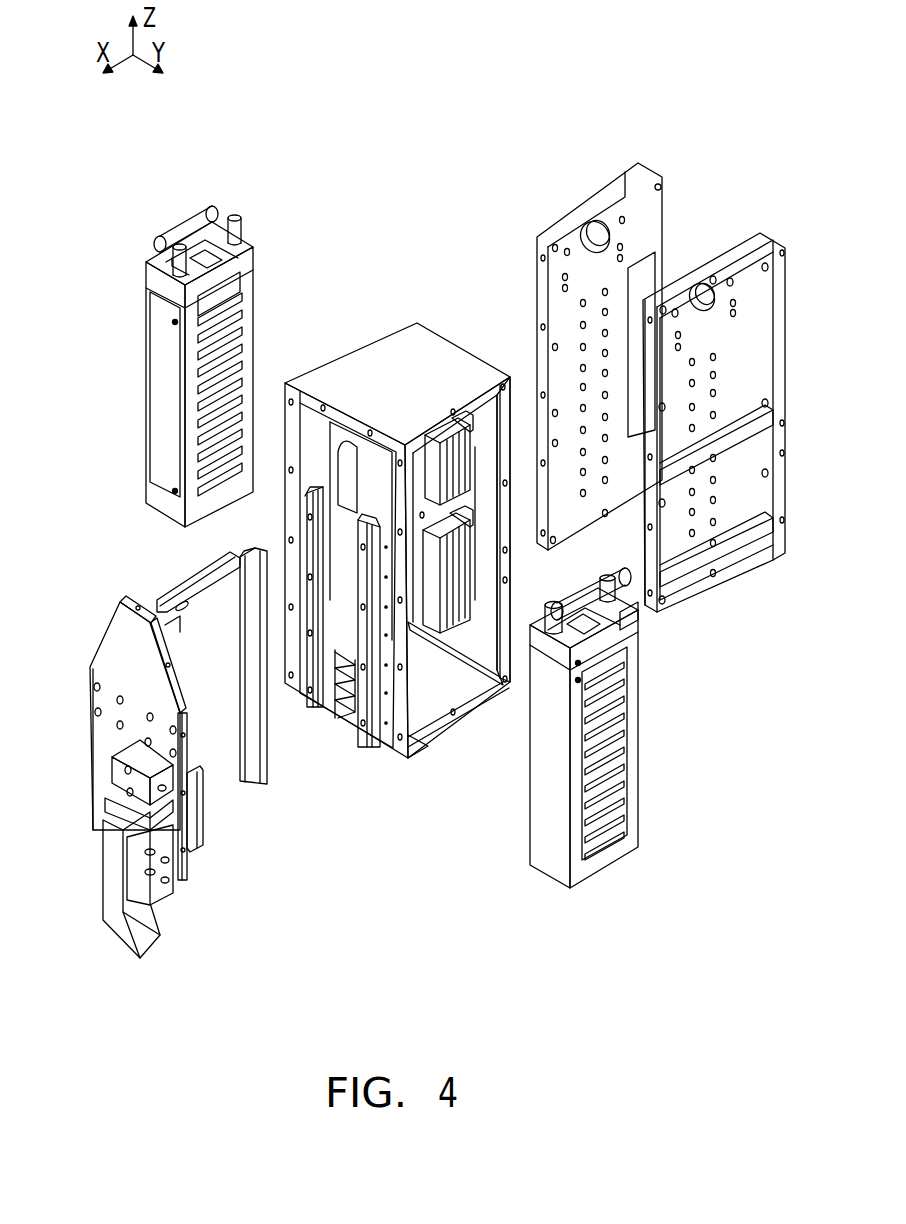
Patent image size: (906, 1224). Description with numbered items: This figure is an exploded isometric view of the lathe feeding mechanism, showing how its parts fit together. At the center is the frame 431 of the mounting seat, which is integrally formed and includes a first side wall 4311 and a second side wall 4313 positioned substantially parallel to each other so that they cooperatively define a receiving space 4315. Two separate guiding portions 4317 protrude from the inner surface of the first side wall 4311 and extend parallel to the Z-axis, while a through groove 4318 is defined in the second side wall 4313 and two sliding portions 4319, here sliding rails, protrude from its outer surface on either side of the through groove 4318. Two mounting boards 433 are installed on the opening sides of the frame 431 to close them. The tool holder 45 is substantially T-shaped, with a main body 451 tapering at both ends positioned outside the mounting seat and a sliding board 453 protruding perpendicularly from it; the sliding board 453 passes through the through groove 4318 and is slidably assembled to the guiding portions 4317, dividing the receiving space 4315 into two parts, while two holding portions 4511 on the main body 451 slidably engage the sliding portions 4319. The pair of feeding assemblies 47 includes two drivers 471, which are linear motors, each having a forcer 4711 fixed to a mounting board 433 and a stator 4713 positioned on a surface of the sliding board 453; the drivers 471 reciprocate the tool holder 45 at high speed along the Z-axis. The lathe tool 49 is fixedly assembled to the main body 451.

The feeding assembly 47 is at (161, 208).
The driver 471 is at (44, 490).
The forcer 4711 is at (160, 455).
The stator 4713 is at (200, 565).
The tool holder 45 is at (171, 728).
The main body 451 is at (118, 637).
The holding portion 4511 is at (197, 852).
The sliding board 453 is at (167, 593).
The lathe tool 49 is at (125, 940).
The frame 431 is at (401, 561).
The first side wall 4311 is at (488, 618).
The second side wall 4313 is at (388, 618).
The receiving space 4315 is at (441, 695).
The guiding portion 4317 is at (462, 428).
The through groove 4318 is at (352, 657).
The sliding portion 4319 is at (363, 700).
The mounting board 433 is at (620, 197).